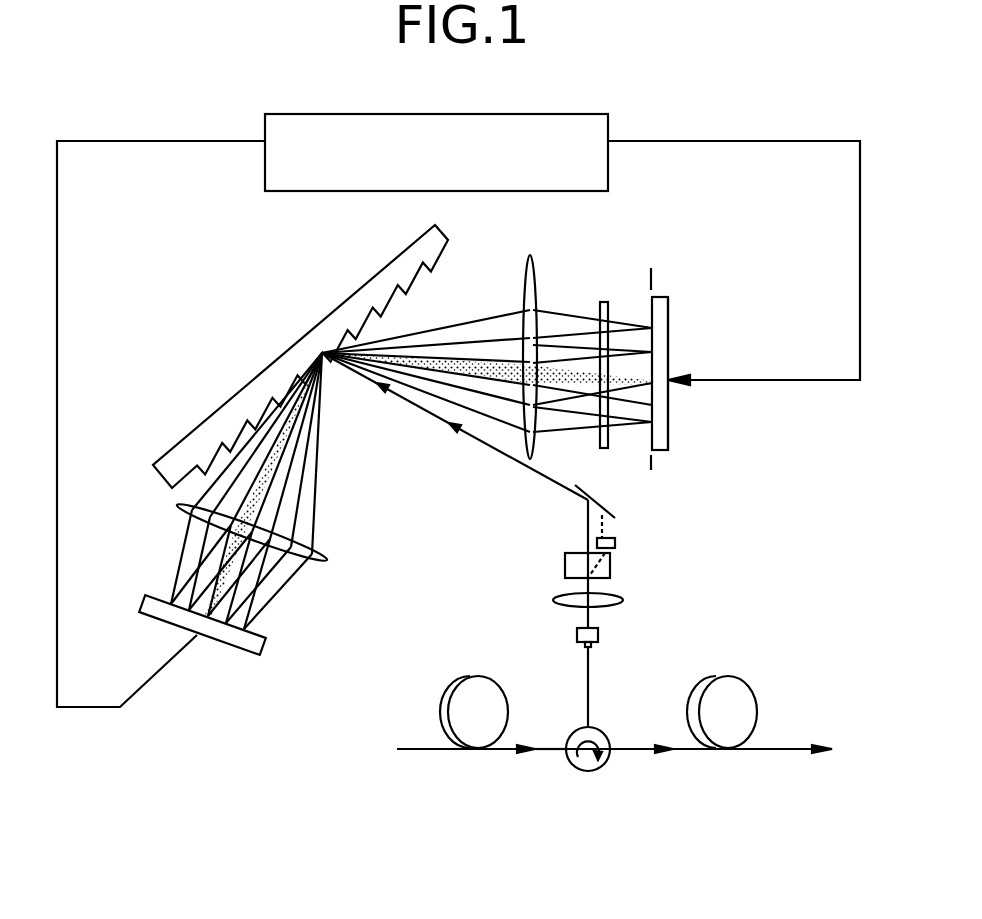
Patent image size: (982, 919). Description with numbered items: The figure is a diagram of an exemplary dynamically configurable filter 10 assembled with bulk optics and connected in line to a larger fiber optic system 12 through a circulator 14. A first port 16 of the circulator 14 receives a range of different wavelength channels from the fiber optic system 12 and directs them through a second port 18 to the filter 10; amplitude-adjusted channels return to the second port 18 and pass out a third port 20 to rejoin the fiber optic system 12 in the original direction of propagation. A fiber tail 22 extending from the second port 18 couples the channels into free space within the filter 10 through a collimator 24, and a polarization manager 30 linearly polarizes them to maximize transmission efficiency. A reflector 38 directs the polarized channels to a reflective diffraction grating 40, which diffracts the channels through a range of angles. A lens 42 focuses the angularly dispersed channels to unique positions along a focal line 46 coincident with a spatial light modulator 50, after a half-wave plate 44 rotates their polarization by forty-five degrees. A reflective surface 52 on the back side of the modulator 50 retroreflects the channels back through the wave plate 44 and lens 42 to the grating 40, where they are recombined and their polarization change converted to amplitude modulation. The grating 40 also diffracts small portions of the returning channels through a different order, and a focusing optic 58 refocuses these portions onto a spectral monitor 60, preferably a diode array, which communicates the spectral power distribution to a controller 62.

The dynamically configurable filter 10 is at (186, 94).
The fiber optic system 12 is at (443, 698).
The circulator 14 is at (581, 772).
The first port 16 is at (565, 756).
The second port 18 is at (591, 722).
The third port 20 is at (611, 756).
The fiber tail 22 is at (582, 668).
The collimator 24 is at (638, 594).
The polarization manager 30 is at (623, 556).
The reflector 38 is at (602, 507).
The reflective diffraction grating 40 is at (373, 268).
The lens 42 is at (525, 266).
The half-wave plate 44 is at (605, 300).
The focal line 46 is at (657, 277).
The spatial light modulator 50 is at (681, 311).
The reflective surface 52 is at (670, 430).
The focusing optic 58 is at (314, 557).
The spectral monitor 60 is at (270, 645).
The controller 62 is at (436, 152).